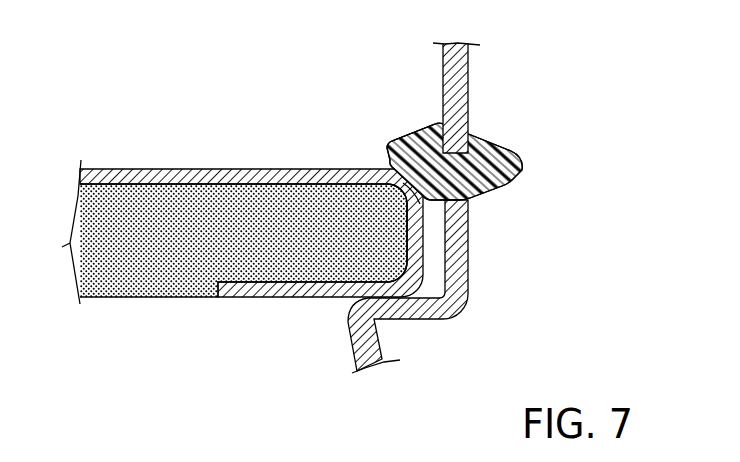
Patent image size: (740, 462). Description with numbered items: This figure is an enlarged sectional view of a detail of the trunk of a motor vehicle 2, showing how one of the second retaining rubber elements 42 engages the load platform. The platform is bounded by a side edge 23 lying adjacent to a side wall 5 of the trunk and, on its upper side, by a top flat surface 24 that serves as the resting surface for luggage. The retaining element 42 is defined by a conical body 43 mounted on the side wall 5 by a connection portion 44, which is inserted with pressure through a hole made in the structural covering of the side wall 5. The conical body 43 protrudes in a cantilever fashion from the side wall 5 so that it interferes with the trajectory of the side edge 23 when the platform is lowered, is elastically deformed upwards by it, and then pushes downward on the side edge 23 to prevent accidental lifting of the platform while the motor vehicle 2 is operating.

The motor vehicle 2 is at (132, 263).
The side wall 5 is at (467, 92).
The side edge 23 is at (383, 238).
The top flat surface 24 is at (181, 162).
The second retaining rubber element 42 is at (459, 109).
The conical body 43 is at (414, 141).
The connection portion 44 is at (516, 154).